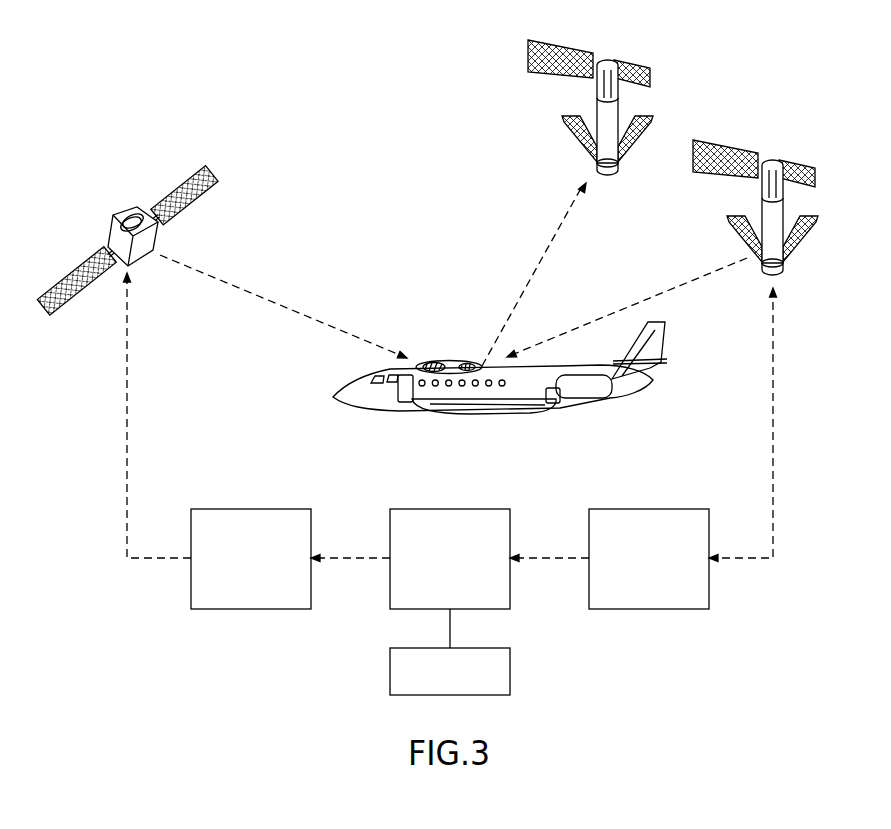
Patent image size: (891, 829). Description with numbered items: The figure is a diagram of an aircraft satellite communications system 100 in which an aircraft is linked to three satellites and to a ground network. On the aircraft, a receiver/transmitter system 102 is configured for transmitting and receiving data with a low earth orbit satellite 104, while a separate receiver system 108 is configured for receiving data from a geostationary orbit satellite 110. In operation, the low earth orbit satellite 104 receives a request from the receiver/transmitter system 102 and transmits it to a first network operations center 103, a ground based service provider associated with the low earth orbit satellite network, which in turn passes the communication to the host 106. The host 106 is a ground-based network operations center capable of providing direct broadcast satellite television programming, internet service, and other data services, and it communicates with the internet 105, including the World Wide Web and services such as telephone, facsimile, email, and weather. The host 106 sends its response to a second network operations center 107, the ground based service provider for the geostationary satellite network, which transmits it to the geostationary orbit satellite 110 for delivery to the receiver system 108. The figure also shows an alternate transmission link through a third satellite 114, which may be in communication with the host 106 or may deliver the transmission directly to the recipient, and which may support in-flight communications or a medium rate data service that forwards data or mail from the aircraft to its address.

The aircraft satellite communications system 100 is at (388, 246).
The receiver/transmitter system 102 is at (467, 362).
The first network operations center 103 is at (648, 509).
The low earth orbit satellite 104 is at (800, 153).
The internet 105 is at (510, 665).
The host 106 is at (450, 509).
The second network operations center 107 is at (252, 509).
The receiver system 108 is at (434, 362).
The geostationary orbit satellite 110 is at (205, 163).
The third satellite 114 is at (633, 62).